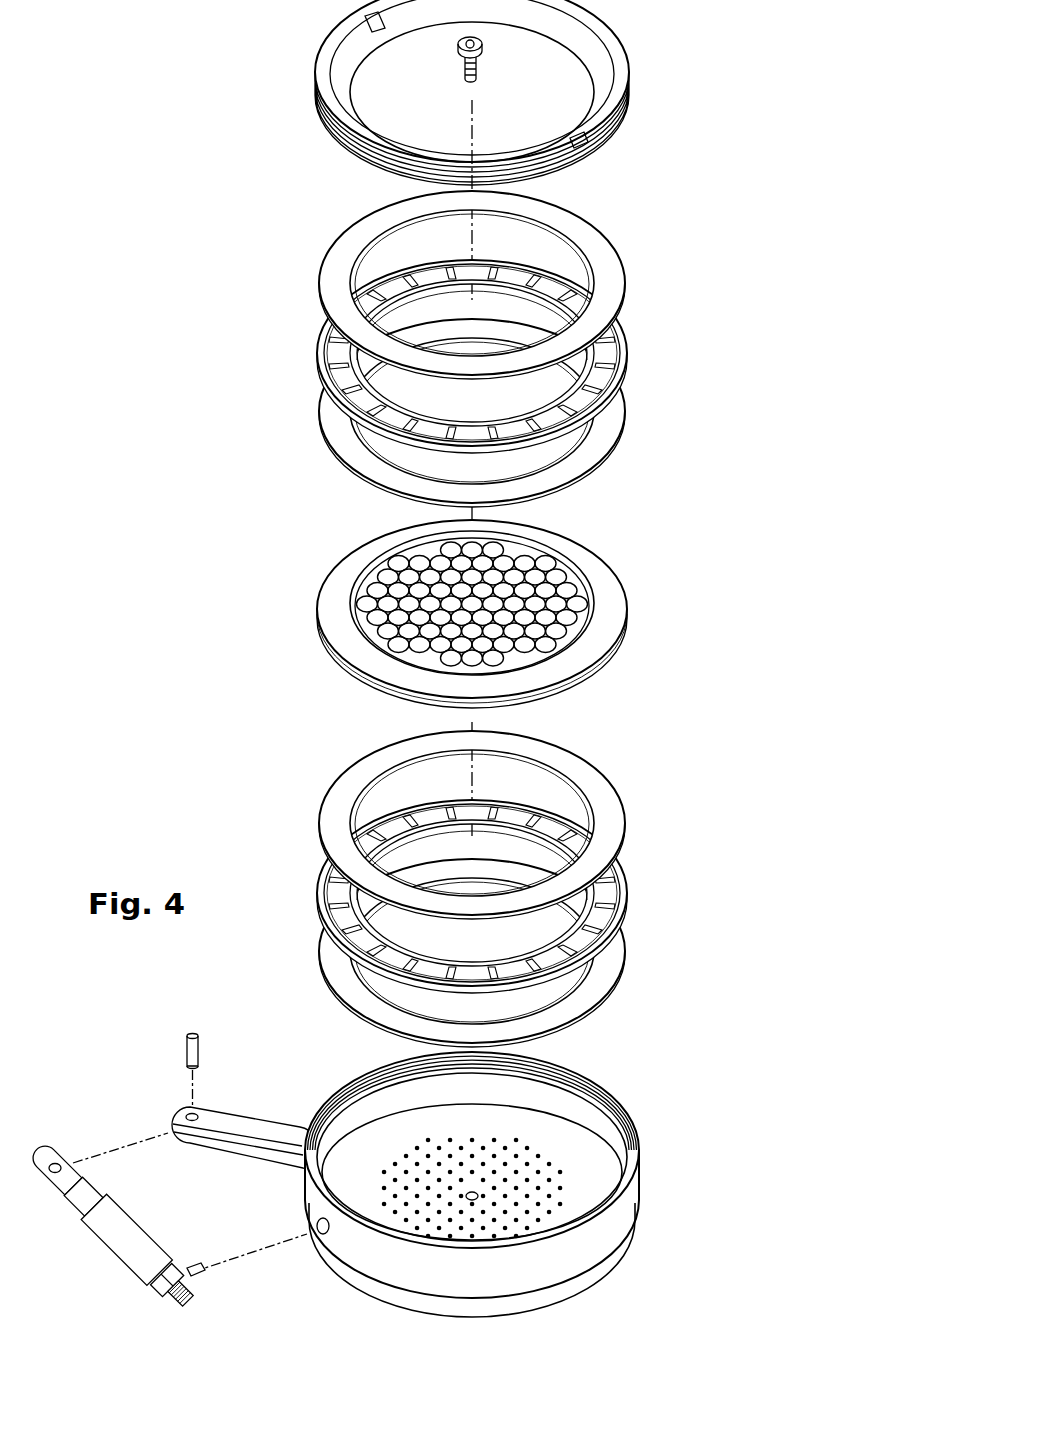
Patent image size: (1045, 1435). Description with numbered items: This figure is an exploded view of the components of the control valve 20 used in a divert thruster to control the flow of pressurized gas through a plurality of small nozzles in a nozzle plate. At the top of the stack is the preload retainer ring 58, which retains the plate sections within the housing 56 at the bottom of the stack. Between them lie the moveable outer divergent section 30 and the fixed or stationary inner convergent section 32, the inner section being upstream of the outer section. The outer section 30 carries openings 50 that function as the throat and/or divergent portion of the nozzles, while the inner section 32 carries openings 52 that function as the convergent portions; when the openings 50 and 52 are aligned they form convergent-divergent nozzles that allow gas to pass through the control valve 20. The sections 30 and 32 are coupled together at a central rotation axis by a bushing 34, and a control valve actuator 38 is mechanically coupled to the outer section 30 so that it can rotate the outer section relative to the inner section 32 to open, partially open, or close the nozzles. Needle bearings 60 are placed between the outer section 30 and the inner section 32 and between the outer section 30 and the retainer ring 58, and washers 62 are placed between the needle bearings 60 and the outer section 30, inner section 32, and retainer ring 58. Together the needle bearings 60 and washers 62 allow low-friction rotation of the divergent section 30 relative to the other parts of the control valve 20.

The control valve 20 is at (405, 658).
The outer divergent section 30 is at (534, 610).
The inner convergent section 32 is at (502, 1170).
The bushing 34 is at (466, 58).
The control valve actuator 38 is at (110, 1247).
The openings 50 is at (393, 558).
The openings 52 is at (405, 1145).
The housing 56 is at (490, 1131).
The preload retainer ring 58 is at (441, 92).
The needle bearings 60 is at (605, 356).
The washers 62 is at (502, 619).